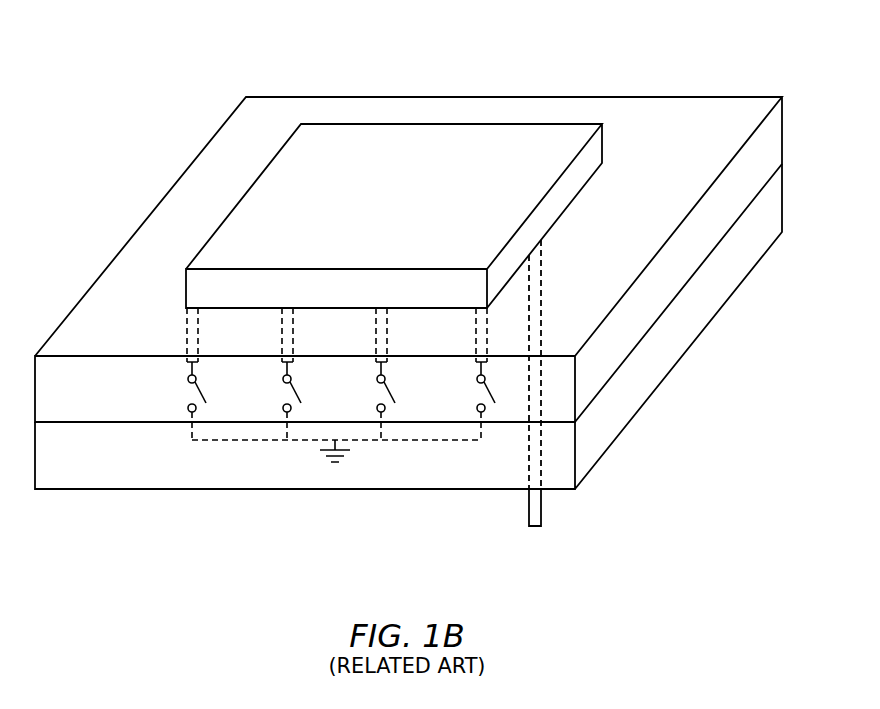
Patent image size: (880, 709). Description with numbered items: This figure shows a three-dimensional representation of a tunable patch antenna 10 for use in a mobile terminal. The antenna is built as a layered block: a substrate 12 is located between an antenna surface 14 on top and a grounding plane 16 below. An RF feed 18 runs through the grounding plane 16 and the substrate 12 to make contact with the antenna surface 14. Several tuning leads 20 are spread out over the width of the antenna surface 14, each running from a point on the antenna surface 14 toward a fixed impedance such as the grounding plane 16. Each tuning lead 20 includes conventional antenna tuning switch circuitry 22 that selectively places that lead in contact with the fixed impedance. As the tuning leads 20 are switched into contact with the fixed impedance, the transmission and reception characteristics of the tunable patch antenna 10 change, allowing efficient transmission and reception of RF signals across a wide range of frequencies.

The tunable patch antenna 10 is at (409, 60).
The substrate 12 is at (54, 409).
The antenna surface 14 is at (201, 299).
The grounding plane 16 is at (54, 478).
The RF feed 18 is at (543, 518).
The tuning leads 20 is at (187, 337).
The antenna tuning switch circuitry 22 is at (179, 372).